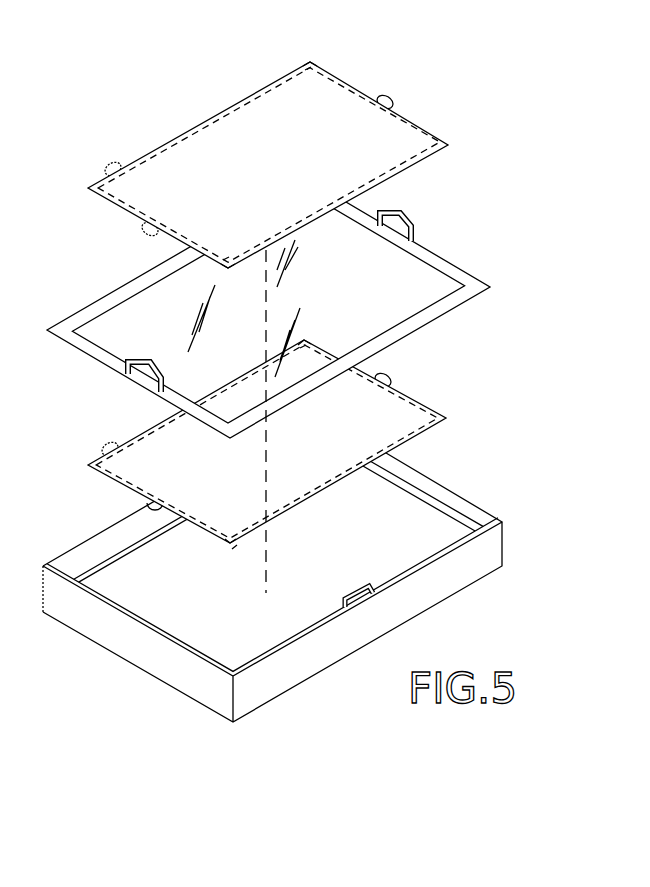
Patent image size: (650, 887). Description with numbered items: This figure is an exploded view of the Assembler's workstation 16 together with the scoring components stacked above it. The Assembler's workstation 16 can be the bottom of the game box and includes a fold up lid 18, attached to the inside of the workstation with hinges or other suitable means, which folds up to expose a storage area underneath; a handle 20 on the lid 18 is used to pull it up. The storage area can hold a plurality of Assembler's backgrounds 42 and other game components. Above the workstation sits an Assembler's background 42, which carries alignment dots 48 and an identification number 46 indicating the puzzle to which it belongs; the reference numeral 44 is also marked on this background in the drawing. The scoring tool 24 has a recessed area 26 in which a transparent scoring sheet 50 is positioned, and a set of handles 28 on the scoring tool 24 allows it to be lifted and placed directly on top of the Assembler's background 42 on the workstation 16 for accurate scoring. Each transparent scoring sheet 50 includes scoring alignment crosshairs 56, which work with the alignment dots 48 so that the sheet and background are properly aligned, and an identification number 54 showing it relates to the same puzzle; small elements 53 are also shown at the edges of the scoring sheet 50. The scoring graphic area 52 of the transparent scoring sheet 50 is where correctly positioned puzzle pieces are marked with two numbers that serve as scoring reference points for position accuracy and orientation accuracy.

The Assembler's workstation 16 is at (135, 659).
The fold up lid 18 is at (92, 565).
The handle 20 is at (356, 598).
The scoring tool 24 is at (438, 262).
The recessed area 26 is at (434, 301).
The handles 28 is at (405, 217).
The Assembler's background 42 is at (424, 411).
The plate edge seal 44 is at (426, 434).
The identification number 46 is at (100, 430).
The alignment dots 48 is at (300, 349).
The transparent scoring sheet 50 is at (326, 84).
The scoring graphic area 52 is at (247, 97).
The bumper 53 is at (396, 101).
The identification number 54 is at (96, 158).
The scoring alignment crosshairs 56 is at (312, 63).